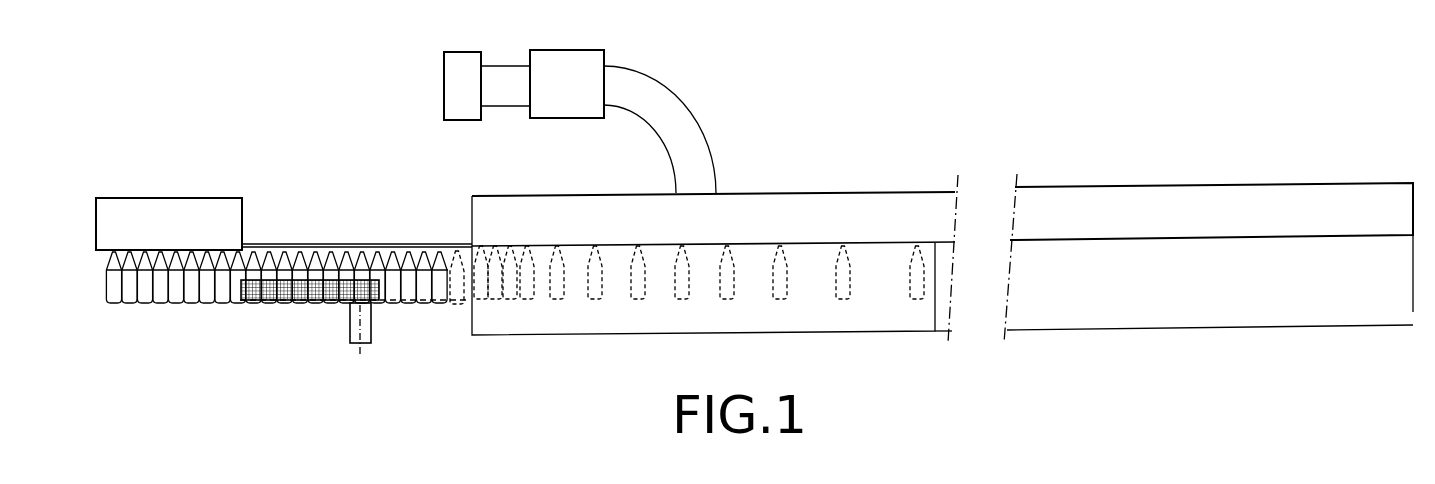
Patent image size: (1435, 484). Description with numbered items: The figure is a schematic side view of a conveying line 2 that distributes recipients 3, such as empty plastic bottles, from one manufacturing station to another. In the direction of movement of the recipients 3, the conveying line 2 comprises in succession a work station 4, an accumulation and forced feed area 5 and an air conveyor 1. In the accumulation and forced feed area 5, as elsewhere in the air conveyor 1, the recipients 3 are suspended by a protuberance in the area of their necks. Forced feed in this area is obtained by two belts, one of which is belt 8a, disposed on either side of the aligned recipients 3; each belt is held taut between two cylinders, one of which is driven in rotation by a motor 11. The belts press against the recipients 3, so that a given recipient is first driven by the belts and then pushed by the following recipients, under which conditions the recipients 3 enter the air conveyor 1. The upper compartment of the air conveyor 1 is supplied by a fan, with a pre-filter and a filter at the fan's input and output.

The air conveyor 1 is at (785, 186).
The conveying line 2 is at (386, 99).
The recipients 3 is at (441, 296).
The work station 4 is at (176, 194).
The accumulation and forced feed area 5 is at (346, 224).
The belt 8a is at (271, 303).
The motor 11 is at (371, 333).